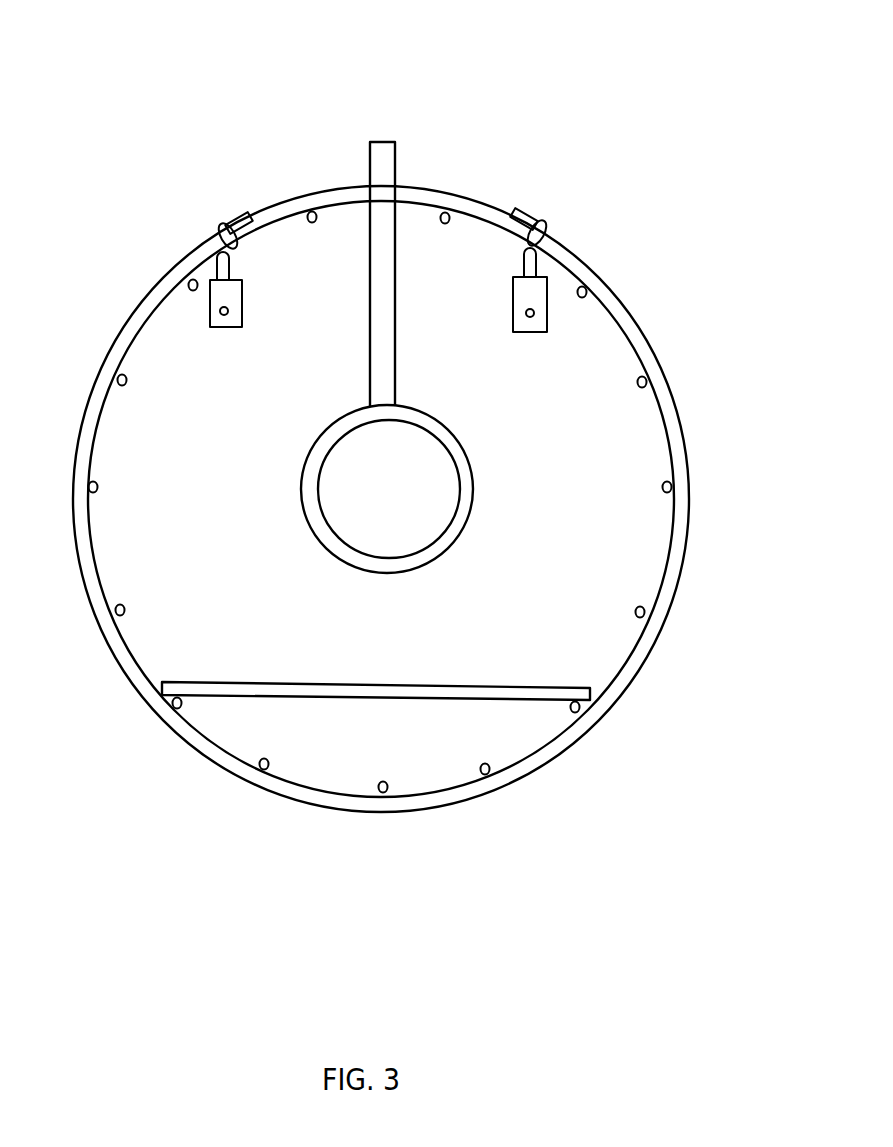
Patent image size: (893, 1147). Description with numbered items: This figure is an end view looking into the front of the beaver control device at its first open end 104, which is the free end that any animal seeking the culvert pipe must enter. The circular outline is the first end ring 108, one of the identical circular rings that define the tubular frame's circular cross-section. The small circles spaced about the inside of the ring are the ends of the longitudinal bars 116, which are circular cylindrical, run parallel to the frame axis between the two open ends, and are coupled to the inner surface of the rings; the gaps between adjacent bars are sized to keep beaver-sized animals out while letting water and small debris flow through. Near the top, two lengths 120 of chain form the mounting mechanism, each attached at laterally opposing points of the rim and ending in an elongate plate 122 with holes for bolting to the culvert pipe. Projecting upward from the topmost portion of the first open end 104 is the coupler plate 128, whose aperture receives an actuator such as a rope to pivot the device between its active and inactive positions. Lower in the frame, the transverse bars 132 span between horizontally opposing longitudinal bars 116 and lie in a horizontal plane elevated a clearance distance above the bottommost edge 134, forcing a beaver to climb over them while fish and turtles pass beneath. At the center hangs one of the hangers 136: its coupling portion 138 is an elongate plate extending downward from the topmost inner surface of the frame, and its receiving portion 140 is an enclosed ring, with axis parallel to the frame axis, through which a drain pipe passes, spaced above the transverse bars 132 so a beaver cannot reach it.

The first open end 104 is at (647, 720).
The first end ring 108 is at (120, 347).
The longitudinal bars 116 is at (667, 486).
The lengths of chain 120 is at (273, 287).
The elongate plate 122 is at (208, 306).
The coupler plate 128 is at (392, 168).
The transverse bars 132 is at (217, 695).
The bottommost edge 134 is at (380, 822).
The hangers 136 is at (487, 377).
The coupling portion 138 is at (404, 262).
The receiving portion 140 is at (497, 482).